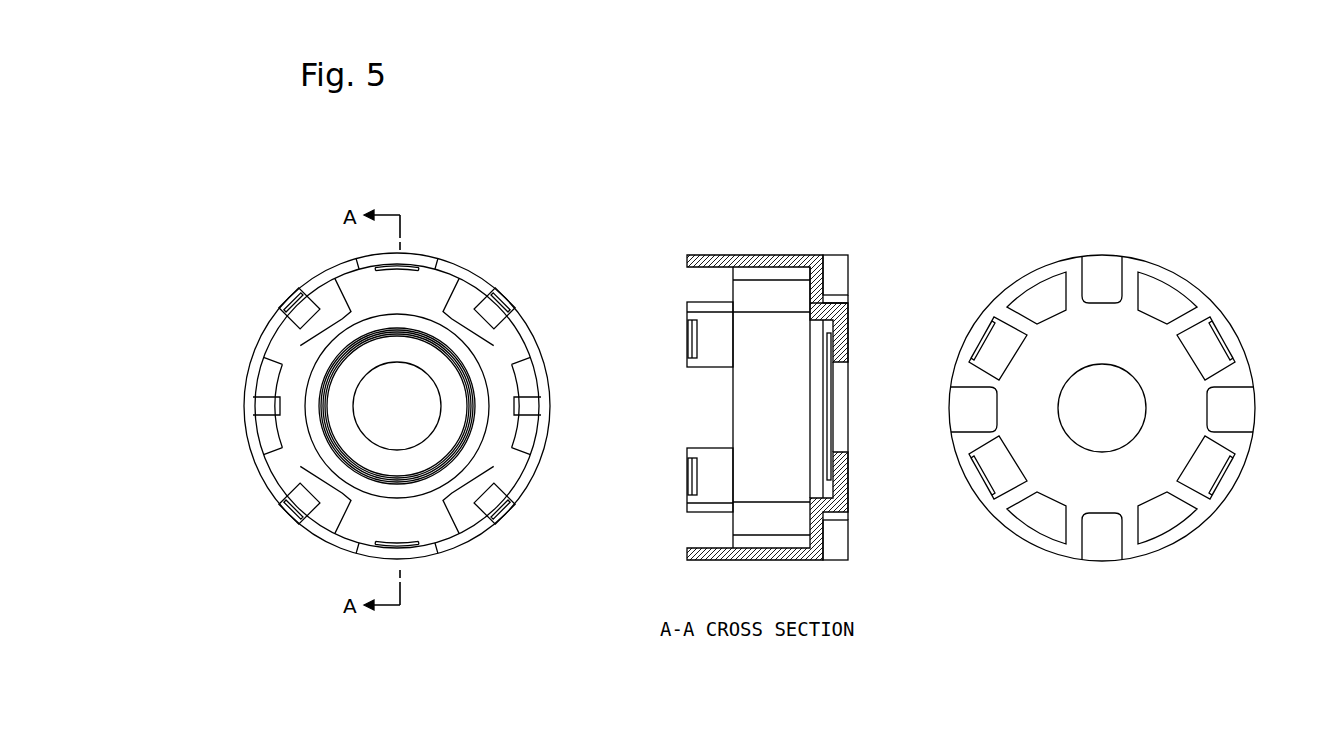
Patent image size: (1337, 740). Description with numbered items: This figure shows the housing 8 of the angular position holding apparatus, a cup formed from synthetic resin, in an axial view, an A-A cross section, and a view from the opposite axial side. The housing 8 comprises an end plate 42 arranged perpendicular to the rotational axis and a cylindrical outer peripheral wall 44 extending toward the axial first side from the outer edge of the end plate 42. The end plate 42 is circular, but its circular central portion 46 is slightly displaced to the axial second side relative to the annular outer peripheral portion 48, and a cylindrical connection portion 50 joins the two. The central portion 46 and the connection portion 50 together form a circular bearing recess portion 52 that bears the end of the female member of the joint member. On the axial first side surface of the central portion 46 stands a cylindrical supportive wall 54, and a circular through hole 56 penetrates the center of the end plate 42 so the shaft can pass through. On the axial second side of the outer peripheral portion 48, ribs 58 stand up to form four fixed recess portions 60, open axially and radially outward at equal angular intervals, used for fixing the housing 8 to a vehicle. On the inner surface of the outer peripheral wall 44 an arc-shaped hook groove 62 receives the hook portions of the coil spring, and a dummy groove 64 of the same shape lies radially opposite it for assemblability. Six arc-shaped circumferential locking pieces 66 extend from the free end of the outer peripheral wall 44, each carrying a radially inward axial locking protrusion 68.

The housing 8 is at (770, 144).
The end plate 42 is at (828, 272).
The outer peripheral wall 44 is at (753, 252).
The central portion 46 is at (842, 315).
The outer peripheral portion 48 is at (806, 290).
The connection portion 50 is at (812, 320).
The bearing recess portion 52 is at (818, 405).
The supportive wall 54 is at (322, 401).
The through hole 56 is at (408, 418).
The ribs 58 is at (1140, 292).
The fixed recess portions 60 is at (838, 540).
The hook groove 62 is at (397, 525).
The dummy groove 64 is at (397, 290).
The circumferential locking pieces 66 is at (258, 478).
The axial locking protrusion 68 is at (292, 480).